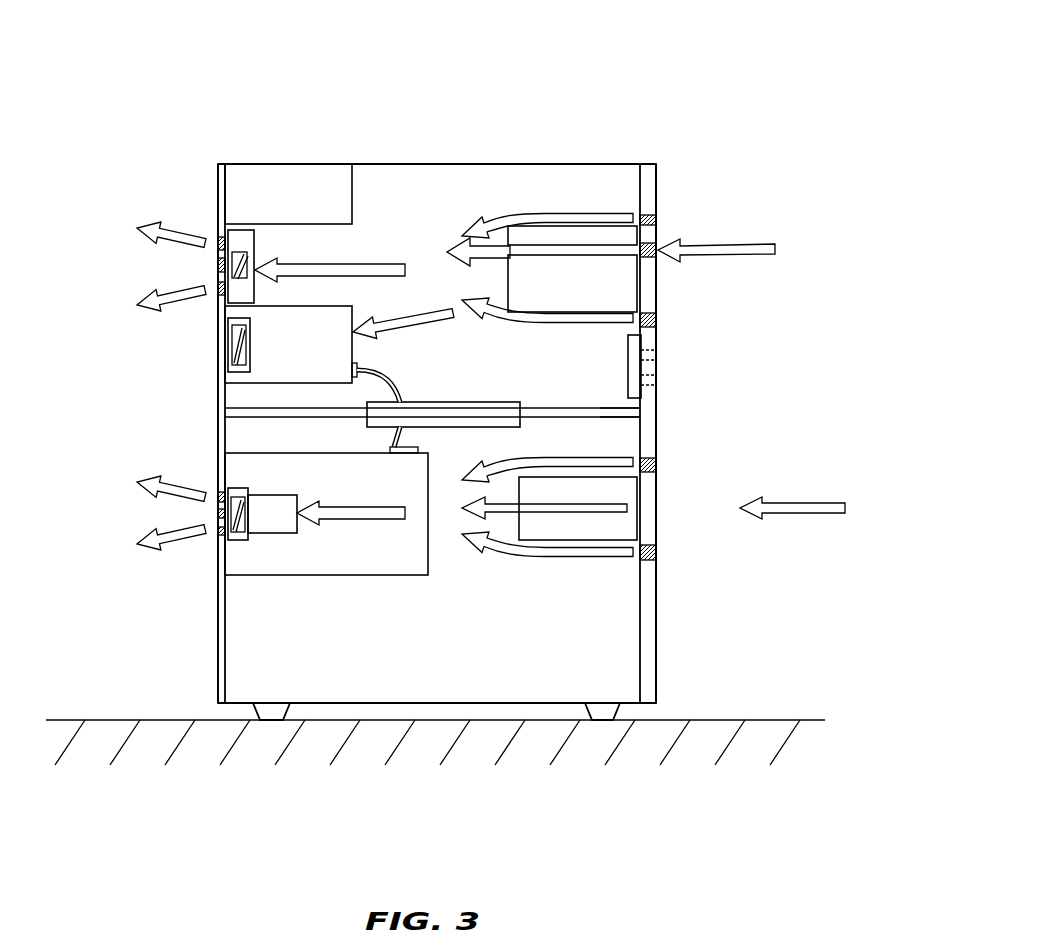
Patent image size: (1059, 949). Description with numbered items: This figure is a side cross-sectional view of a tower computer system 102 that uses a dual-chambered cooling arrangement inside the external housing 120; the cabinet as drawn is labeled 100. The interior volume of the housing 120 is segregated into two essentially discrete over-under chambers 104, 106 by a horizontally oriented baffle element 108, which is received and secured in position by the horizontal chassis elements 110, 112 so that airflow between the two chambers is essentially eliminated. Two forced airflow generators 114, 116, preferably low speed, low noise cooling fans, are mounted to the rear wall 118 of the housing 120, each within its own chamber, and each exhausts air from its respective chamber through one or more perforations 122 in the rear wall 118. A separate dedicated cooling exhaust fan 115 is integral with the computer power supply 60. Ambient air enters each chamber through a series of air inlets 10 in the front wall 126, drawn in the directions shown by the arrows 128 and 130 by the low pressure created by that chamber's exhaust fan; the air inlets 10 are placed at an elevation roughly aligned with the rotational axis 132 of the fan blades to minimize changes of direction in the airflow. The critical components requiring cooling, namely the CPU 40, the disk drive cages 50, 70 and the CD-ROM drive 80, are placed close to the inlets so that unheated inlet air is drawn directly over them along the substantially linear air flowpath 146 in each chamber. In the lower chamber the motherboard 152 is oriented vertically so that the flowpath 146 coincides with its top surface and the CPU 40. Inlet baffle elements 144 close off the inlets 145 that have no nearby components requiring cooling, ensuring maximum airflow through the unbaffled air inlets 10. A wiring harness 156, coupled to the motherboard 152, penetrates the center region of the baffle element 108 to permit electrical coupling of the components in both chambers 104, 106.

The air inlets 10 is at (658, 220).
The CPU 40 is at (270, 495).
The disk drive cage 50 is at (550, 532).
The computer power supply 60 is at (352, 356).
The disk drive cage 70 is at (508, 290).
The CD-ROM drive 80 is at (538, 235).
The cabinet 100 is at (604, 630).
The computer system 102 is at (697, 119).
The upper chamber 104 is at (404, 204).
The lower chamber 106 is at (267, 646).
The baffle element 108 is at (497, 402).
The horizontal chassis element 110 is at (228, 413).
The horizontal chassis element 112 is at (640, 415).
The forced airflow generator 114 is at (234, 236).
The cooling exhaust fan 115 is at (250, 345).
The forced airflow generator 116 is at (233, 540).
The rear wall 118 is at (218, 358).
The external housing 120 is at (556, 164).
The perforations 122 is at (222, 265).
The front wall 126 is at (657, 180).
The arrow 128 is at (775, 244).
The arrow 130 is at (847, 503).
The rotational axis 132 is at (255, 268).
The inlet baffle element 144 is at (641, 342).
The baffled inlets 145 is at (656, 380).
The air flowpath 146 is at (458, 247).
The motherboard 152 is at (428, 575).
The wiring harness 156 is at (396, 384).